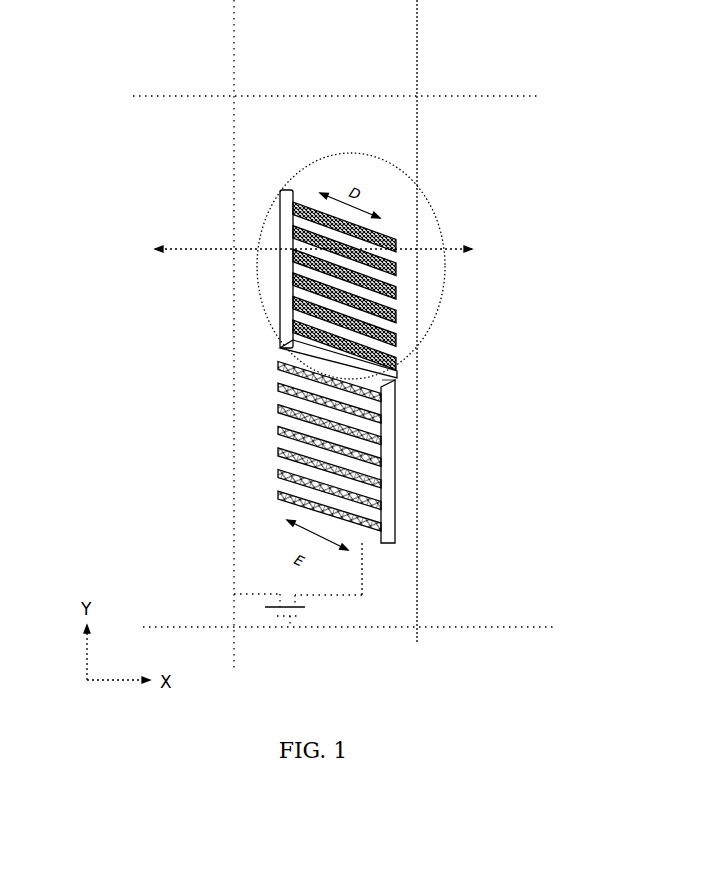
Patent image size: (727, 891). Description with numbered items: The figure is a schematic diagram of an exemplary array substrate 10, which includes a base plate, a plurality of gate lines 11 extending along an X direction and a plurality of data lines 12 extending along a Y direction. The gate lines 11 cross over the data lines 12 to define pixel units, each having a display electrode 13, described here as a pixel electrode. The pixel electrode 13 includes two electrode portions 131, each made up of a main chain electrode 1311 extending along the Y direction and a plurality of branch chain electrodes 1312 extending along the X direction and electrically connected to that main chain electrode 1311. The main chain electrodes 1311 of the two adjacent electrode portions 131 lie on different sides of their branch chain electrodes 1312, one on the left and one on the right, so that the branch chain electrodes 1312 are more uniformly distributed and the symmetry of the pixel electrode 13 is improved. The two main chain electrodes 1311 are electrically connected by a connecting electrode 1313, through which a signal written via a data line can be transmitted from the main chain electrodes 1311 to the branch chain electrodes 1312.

The array substrate 10 is at (124, 56).
The gate line 11 is at (460, 95).
The data line 12 is at (422, 605).
The display electrode 13 is at (306, 366).
The electrode portion 131 is at (440, 230).
The main chain electrode 1311 is at (279, 275).
The branch chain electrode 1312 is at (398, 321).
The connecting electrode 1313 is at (387, 381).